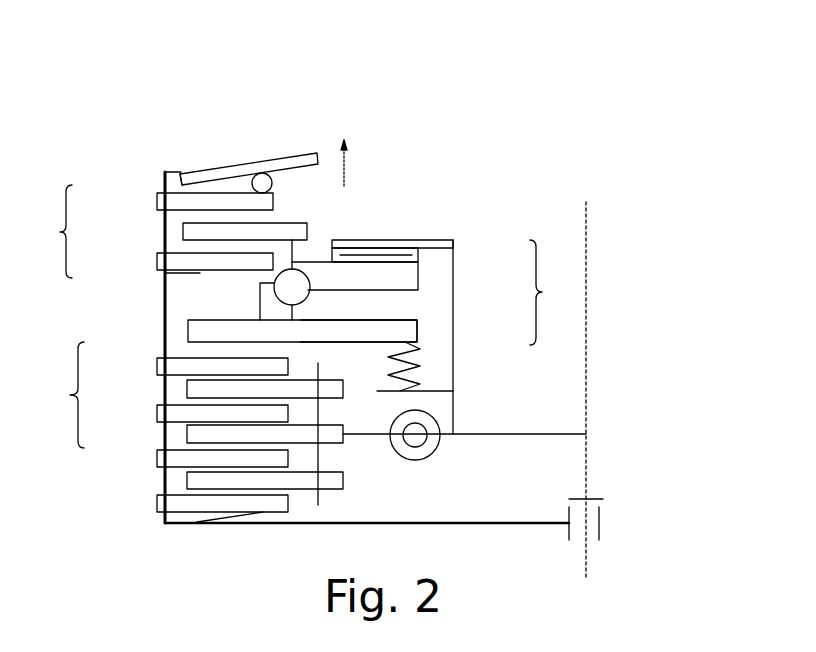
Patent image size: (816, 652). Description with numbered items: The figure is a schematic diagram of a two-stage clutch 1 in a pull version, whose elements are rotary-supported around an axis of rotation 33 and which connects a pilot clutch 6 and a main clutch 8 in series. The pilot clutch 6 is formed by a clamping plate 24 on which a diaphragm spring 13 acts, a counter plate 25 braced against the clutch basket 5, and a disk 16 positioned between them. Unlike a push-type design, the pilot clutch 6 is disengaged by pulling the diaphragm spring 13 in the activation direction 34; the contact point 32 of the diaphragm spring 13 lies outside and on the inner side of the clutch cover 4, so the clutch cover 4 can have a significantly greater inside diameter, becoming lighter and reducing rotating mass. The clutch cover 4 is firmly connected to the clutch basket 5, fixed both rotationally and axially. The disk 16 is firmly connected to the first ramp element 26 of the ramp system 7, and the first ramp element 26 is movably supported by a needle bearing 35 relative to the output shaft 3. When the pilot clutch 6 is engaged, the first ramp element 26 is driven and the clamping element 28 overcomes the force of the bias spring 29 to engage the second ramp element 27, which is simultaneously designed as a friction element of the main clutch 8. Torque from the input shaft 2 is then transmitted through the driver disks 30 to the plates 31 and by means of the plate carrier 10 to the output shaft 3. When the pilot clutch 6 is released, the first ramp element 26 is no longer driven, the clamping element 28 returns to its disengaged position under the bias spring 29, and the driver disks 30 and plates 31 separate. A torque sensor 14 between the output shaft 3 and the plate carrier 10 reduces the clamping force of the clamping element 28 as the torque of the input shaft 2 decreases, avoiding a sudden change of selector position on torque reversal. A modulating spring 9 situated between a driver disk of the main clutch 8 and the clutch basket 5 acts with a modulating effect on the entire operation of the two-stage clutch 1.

The two-stage clutch 1 is at (126, 80).
The input shaft 2 is at (600, 525).
The output shaft 3 is at (586, 452).
The clutch cover 4 is at (163, 178).
The clutch basket 5 is at (163, 518).
The pilot clutch 6 is at (58, 231).
The ramp system 7 is at (508, 337).
The main clutch 8 is at (197, 427).
The modulating spring 9 is at (230, 524).
The plate carrier 10 is at (322, 459).
The diaphragm spring 13 is at (278, 158).
The torque sensor 14 is at (435, 448).
The disk 16 is at (195, 232).
The clamping plate 24 is at (178, 205).
The counter plate 25 is at (175, 262).
The first ramp element 26 is at (400, 272).
The second ramp element 27 is at (408, 326).
The clamping element 28 is at (303, 285).
The bias spring 29 is at (420, 378).
The driver disks 30 is at (200, 330).
The plates 31 is at (178, 413).
The contact point 32 is at (182, 173).
The axis of rotation 33 is at (586, 320).
The activation direction 34 is at (346, 163).
The needle bearing 35 is at (398, 240).